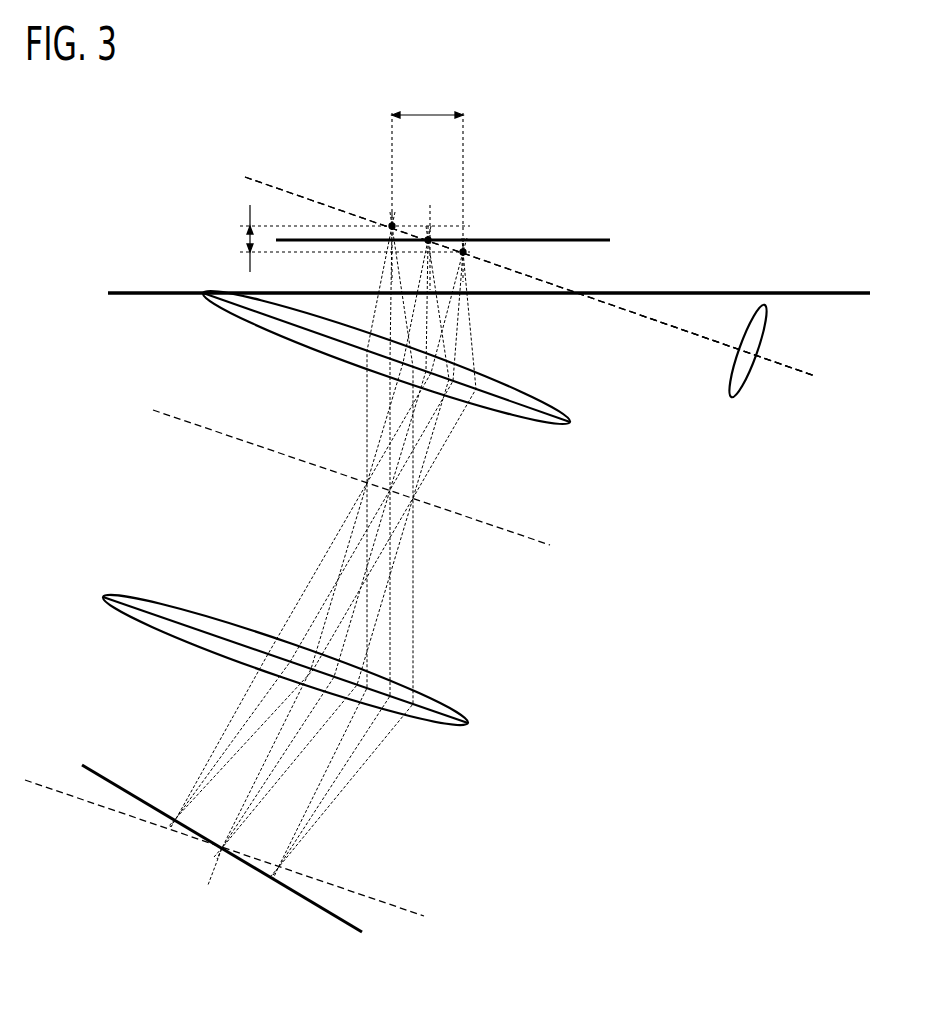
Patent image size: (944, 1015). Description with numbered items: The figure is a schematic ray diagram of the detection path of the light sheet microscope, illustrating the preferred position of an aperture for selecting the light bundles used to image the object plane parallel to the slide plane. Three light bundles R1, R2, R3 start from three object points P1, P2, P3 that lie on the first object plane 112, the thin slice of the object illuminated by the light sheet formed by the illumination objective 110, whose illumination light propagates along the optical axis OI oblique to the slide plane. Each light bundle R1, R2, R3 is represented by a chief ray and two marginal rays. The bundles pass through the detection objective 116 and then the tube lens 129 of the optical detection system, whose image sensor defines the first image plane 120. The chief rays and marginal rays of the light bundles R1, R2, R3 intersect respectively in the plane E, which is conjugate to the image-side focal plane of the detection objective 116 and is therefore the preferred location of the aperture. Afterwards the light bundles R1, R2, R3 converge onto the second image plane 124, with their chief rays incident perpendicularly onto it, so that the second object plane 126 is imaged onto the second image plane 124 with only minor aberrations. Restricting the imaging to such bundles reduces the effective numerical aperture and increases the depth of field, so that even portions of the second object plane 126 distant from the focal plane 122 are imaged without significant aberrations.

The illumination objective 110 is at (770, 320).
The first object plane 112 is at (288, 192).
The focal plane 122 is at (530, 276).
The detection objective 116 is at (576, 424).
The first image plane 120 is at (400, 907).
The second image plane 124 is at (108, 776).
The second object plane 126 is at (604, 238).
The tube lens 129 is at (466, 718).
The plane conjugate to the image-side focal plane E is at (540, 541).
The optical axis of illumination OI is at (798, 371).
The object point P1 is at (388, 222).
The object point P2 is at (429, 234).
The object point P3 is at (467, 255).
The light bundle R1 is at (392, 210).
The light bundle R2 is at (429, 210).
The light bundle R3 is at (466, 227).